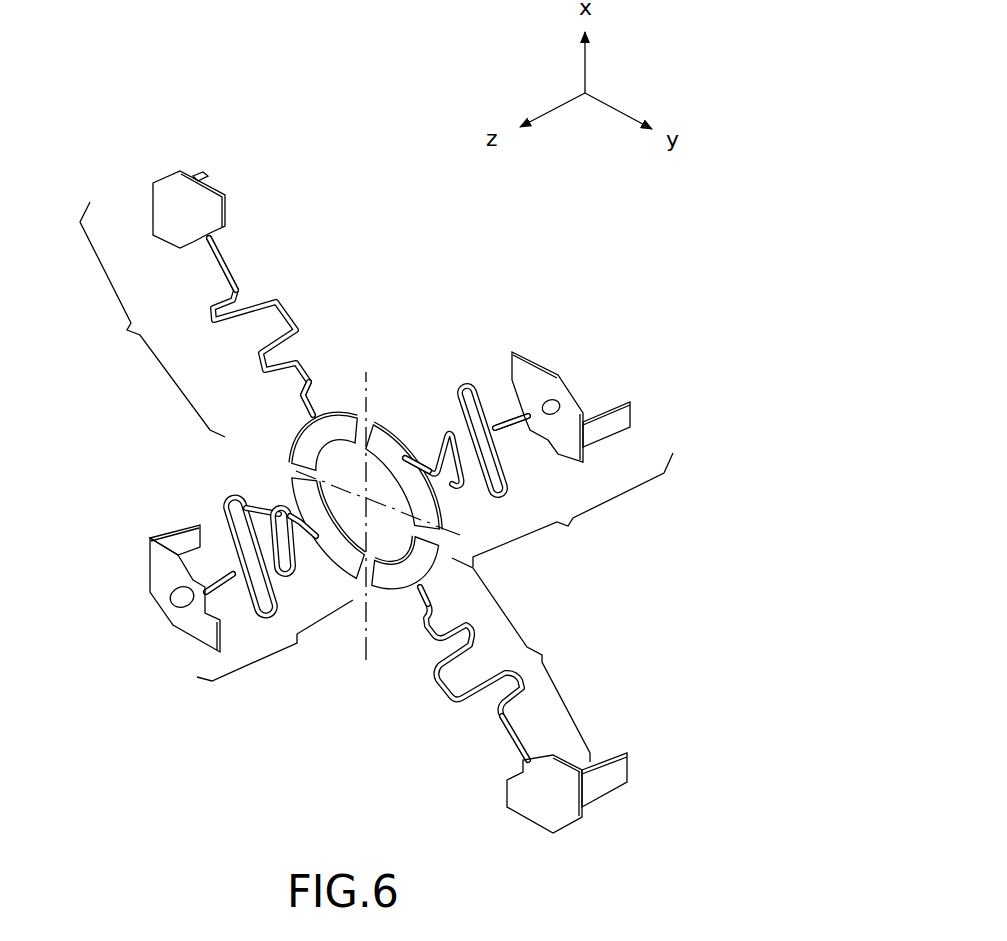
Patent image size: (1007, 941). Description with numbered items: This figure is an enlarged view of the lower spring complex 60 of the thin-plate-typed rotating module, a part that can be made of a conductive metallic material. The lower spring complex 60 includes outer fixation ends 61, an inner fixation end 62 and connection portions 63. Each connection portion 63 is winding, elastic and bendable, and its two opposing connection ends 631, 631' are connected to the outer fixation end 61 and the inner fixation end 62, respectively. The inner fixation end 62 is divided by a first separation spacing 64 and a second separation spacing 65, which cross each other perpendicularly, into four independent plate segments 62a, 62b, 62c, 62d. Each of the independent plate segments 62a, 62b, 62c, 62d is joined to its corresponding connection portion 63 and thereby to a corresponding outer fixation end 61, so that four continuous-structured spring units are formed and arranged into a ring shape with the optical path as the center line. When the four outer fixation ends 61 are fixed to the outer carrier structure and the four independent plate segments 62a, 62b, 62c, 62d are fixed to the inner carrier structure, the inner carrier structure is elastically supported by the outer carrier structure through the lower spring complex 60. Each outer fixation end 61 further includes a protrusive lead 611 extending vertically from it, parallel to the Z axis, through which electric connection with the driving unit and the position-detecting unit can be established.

The lower spring complex 60 is at (387, 240).
The outer fixation end 61 is at (133, 199).
The protrusive lead 611 is at (203, 175).
The inner fixation end 62 is at (387, 420).
The independent plate segment 62a is at (411, 432).
The independent plate segment 62b is at (306, 433).
The independent plate segment 62c is at (300, 498).
The independent plate segment 62d is at (425, 563).
The connection portion 63 is at (218, 340).
The connection end 631 is at (406, 495).
The connection end 631' is at (417, 479).
The first separation spacing 64 is at (366, 422).
The second separation spacing 65 is at (298, 463).